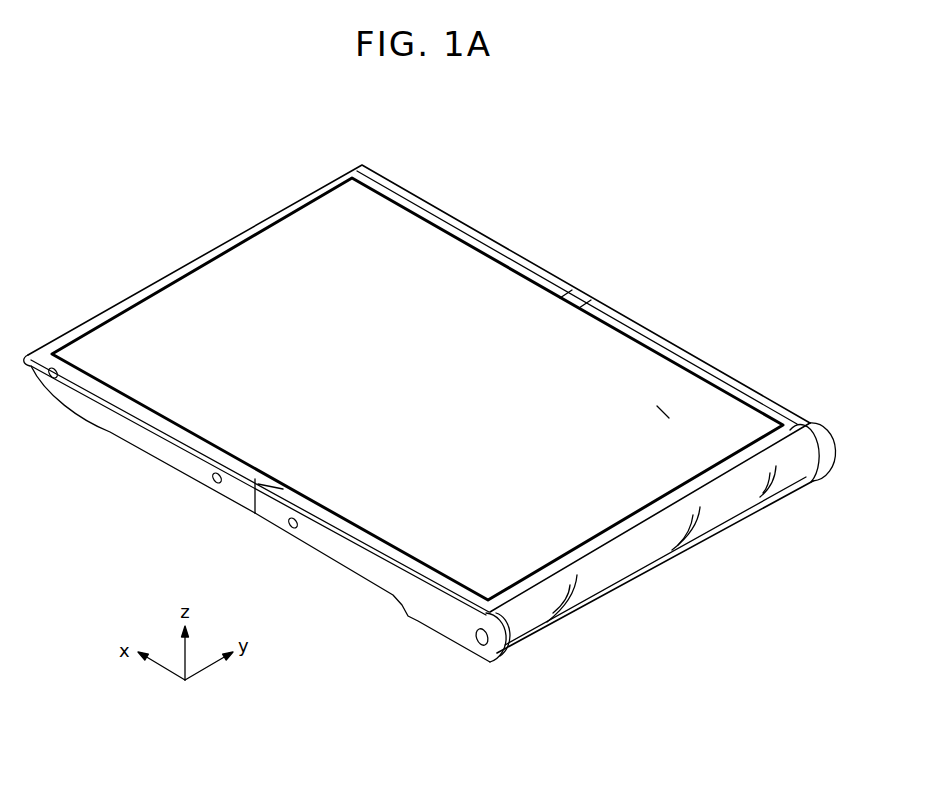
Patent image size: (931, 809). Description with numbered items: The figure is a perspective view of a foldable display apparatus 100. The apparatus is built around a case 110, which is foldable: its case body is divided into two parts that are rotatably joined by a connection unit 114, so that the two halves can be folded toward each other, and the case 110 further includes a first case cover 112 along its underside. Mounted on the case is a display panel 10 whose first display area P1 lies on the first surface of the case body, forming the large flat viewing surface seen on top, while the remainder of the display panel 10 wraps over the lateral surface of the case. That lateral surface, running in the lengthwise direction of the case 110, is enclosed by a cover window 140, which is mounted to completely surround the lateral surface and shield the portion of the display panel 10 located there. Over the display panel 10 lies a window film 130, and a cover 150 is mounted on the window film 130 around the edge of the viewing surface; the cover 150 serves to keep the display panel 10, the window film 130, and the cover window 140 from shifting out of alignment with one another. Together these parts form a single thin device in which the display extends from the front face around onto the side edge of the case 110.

The display apparatus 100 is at (163, 194).
The window film 130 is at (472, 283).
The cover 150 is at (628, 328).
The first display area P1 is at (663, 412).
The case 110 is at (257, 508).
The connection unit 114 is at (232, 489).
The first case cover 112 is at (355, 562).
The cover window 140 is at (655, 542).
The display panel 10 is at (630, 562).